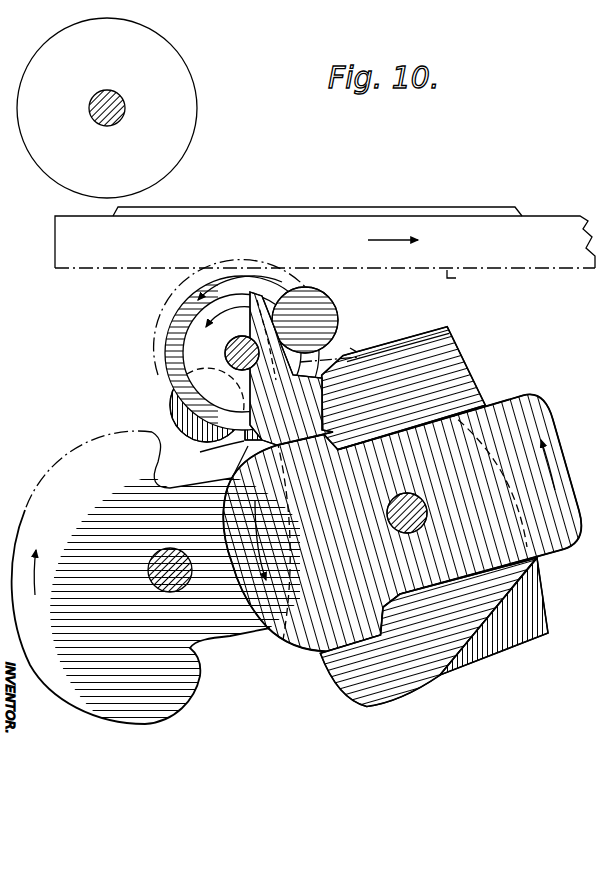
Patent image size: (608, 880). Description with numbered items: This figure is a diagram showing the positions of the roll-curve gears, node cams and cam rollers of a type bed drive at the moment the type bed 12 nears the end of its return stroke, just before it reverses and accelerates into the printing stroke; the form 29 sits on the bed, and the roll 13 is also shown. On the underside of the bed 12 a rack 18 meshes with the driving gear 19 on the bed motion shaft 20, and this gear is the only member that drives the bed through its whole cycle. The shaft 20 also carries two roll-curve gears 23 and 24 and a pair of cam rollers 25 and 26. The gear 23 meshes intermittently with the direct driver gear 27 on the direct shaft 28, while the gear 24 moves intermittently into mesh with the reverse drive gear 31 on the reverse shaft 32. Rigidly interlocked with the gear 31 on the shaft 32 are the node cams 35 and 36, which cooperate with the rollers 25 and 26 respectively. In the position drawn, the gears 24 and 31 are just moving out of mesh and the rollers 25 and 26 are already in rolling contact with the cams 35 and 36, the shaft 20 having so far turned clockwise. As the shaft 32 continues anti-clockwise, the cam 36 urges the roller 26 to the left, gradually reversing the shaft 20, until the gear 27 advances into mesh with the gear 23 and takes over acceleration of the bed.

The type bed 12 is at (336, 228).
The supply roll 13 is at (188, 97).
The rack 18 is at (464, 287).
The driving gear 19 is at (168, 338).
The bed motion shaft 20 is at (226, 355).
The roll-curve gear 23 is at (196, 312).
The roll-curve gear 24 is at (252, 306).
The cam roller 25 is at (180, 408).
The cam roller 26 is at (334, 306).
The direct driver 27 is at (70, 456).
The direct shaft 28 is at (156, 560).
The form 29 is at (430, 208).
The reverse drive gear 31 is at (283, 642).
The reverse shaft 32 is at (412, 493).
The node cam 35 is at (236, 455).
The node cam 36 is at (445, 354).